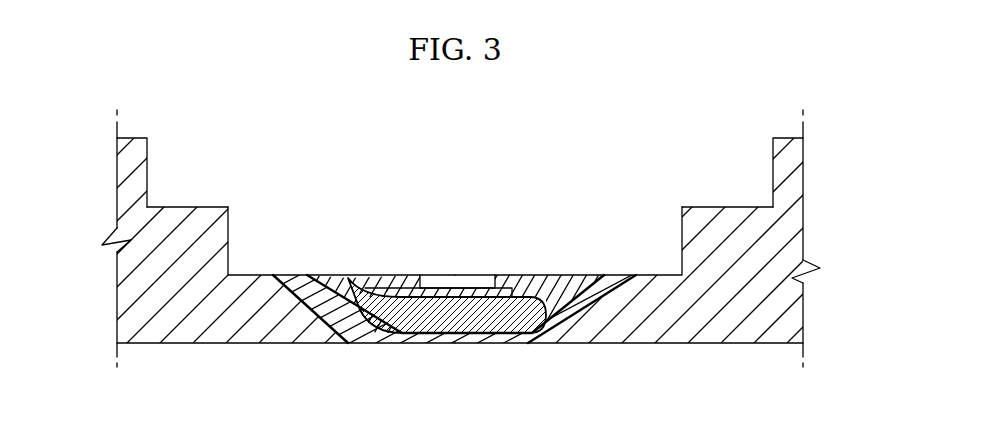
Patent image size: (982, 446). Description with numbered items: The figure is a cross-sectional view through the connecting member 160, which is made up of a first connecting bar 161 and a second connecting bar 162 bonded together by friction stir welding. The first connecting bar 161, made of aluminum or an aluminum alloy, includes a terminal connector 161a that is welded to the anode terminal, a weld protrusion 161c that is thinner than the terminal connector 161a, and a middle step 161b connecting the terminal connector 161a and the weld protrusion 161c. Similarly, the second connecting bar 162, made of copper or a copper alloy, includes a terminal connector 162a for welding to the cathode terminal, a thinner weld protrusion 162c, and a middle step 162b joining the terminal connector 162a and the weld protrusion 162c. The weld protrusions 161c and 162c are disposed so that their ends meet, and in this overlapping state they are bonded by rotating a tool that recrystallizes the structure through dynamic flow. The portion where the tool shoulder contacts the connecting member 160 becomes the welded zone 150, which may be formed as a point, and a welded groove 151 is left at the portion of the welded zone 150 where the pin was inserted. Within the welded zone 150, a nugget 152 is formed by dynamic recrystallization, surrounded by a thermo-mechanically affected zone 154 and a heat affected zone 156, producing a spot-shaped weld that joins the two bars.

The welded zone 150 is at (593, 275).
The welded groove 151 is at (453, 290).
The nugget 152 is at (510, 310).
The thermo-mechanically affected zone 154 is at (562, 290).
The heat affected zone 156 is at (293, 282).
The connecting member 160 is at (705, 131).
The first connecting bar 161 is at (157, 332).
The terminal connector 161a is at (128, 138).
The middle step 161b is at (187, 207).
The weld protrusion 161c is at (248, 274).
The second connecting bar 162 is at (712, 332).
The terminal connector 162a is at (782, 137).
The middle step 162b is at (703, 207).
The weld protrusion 162c is at (665, 262).